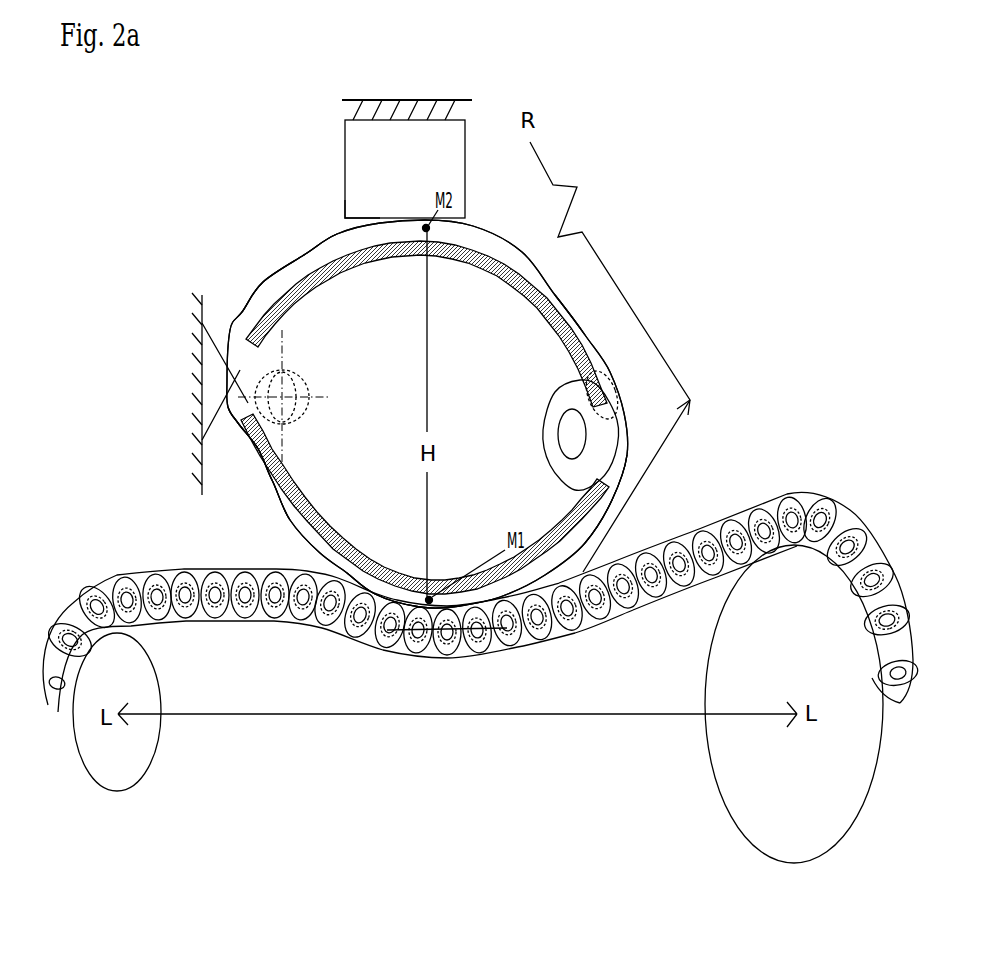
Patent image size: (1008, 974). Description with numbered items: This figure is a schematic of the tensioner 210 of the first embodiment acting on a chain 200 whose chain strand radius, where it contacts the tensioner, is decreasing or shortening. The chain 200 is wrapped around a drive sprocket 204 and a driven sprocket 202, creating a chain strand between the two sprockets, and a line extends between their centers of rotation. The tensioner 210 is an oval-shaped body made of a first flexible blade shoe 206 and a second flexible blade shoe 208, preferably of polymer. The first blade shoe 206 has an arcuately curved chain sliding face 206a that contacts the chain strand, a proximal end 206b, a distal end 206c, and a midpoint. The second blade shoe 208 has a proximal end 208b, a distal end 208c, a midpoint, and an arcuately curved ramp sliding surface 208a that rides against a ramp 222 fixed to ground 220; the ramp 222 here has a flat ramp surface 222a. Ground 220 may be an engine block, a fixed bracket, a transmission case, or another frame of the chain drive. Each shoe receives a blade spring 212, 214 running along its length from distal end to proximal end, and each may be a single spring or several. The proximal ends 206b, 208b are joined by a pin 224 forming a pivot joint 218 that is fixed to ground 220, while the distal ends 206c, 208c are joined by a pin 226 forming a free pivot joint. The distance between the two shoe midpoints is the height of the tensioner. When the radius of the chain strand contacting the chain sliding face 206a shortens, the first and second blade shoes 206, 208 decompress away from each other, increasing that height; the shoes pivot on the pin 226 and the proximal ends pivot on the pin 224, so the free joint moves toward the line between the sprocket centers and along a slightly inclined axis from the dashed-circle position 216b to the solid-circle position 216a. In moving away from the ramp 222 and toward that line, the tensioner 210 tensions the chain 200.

The chain 200 is at (370, 641).
The driven sprocket 202 is at (785, 645).
The drive sprocket 204 is at (100, 688).
The first blade shoe 206 is at (408, 576).
The arcuately curved chain sliding face 206a is at (272, 500).
The proximal end of first blade shoe 206b is at (252, 453).
The distal end of first blade shoe 206c is at (610, 494).
The second blade shoe 208 is at (482, 247).
The arcuately curved ramp sliding surface 208a is at (317, 247).
The proximal end of second blade shoe 208b is at (272, 295).
The distal end of second blade shoe 208c is at (575, 328).
The tensioner 210 is at (353, 348).
The blade spring 212 is at (302, 508).
The blade spring 214 is at (372, 258).
The free pivot joint position 216a is at (558, 431).
The free pivot joint position 216b is at (603, 371).
The pivot joint 218 is at (290, 378).
The ground 220 is at (390, 99).
The ramp 222 is at (386, 178).
The flat ramp surface 222a is at (365, 218).
The pin 224 is at (289, 404).
The pin 226 is at (577, 421).